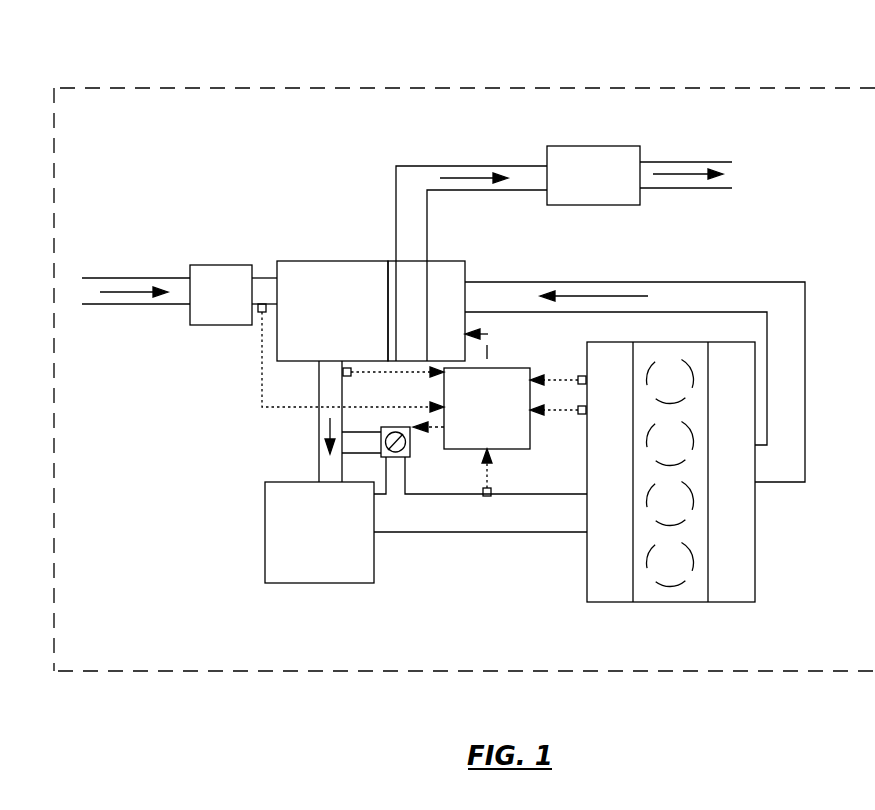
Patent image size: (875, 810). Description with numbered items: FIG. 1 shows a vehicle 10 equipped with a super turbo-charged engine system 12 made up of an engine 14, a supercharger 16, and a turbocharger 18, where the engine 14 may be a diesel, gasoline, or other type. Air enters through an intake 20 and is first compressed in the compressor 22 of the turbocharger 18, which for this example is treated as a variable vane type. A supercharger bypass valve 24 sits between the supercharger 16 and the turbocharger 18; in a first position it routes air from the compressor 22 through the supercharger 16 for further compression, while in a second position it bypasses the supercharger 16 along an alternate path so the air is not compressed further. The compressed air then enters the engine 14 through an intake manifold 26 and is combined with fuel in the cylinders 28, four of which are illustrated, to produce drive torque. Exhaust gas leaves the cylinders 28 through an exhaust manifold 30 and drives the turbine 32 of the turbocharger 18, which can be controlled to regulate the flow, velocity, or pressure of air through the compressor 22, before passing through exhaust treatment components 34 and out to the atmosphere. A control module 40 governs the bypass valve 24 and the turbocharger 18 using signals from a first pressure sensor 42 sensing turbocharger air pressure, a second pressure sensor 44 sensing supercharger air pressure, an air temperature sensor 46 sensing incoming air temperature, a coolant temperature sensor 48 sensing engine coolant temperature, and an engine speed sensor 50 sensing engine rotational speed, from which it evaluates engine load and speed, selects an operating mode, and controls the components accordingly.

The vehicle 10 is at (672, 88).
The super turbo-charged engine system 12 is at (754, 244).
The engine 14 is at (671, 498).
The supercharger 16 is at (309, 541).
The turbocharger 18 is at (371, 281).
The intake 20 is at (211, 302).
The compressor 22 is at (322, 319).
The supercharger bypass valve 24 is at (410, 442).
The intake manifold 26 is at (600, 473).
The cylinders 28 is at (692, 565).
The exhaust manifold 30 is at (722, 473).
The turbine 32 is at (417, 319).
The exhaust treatment components 34 is at (583, 184).
The control module 40 is at (477, 416).
The first pressure sensor 42 is at (351, 375).
The second pressure sensor 44 is at (492, 487).
The air temperature sensor 46 is at (260, 314).
The coolant temperature sensor 48 is at (580, 378).
The engine speed sensor 50 is at (582, 414).